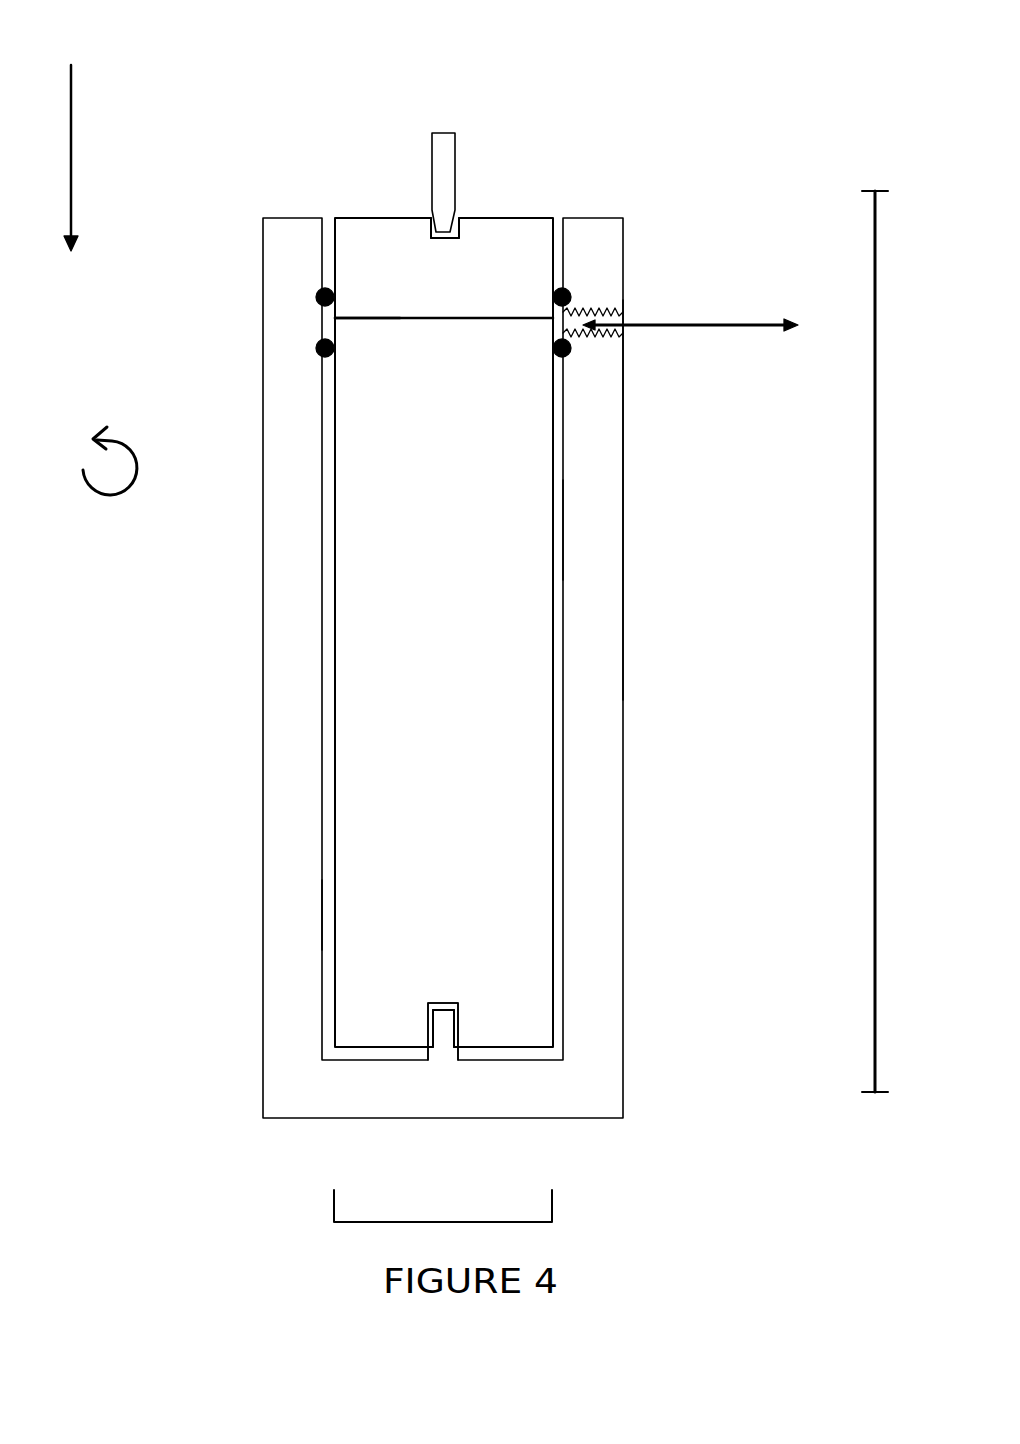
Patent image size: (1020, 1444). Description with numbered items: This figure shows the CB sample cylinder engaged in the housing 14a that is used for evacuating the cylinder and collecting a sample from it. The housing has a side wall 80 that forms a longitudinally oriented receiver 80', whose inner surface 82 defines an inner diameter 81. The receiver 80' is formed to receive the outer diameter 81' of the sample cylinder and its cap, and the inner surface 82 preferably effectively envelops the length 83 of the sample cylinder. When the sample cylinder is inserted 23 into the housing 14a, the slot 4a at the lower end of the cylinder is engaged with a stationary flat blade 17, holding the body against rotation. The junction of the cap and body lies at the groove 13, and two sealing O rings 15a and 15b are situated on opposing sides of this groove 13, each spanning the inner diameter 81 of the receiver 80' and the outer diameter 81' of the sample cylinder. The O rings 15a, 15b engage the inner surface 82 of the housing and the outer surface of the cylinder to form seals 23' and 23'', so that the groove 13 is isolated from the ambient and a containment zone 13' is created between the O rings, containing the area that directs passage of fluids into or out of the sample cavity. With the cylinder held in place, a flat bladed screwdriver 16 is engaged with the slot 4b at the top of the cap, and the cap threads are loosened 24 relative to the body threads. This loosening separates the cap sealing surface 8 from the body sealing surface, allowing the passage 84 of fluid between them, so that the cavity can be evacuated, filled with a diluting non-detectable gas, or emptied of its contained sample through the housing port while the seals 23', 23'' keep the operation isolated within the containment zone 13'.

The side wall 80 is at (380, 668).
The receiver 80' is at (364, 913).
The inner diameter of receiver 81 is at (310, 739).
The outer diameter of sample cylinder 81' is at (626, 605).
The inner surface of receiver 82 is at (567, 532).
The length of sample cylinder 83 is at (875, 573).
The passage of fluid 84 is at (718, 320).
The housing 14a is at (640, 505).
The flat bladed screwdriver 16 is at (462, 185).
The slot 4b is at (422, 227).
The slot 4a is at (445, 995).
The flat blade 17 is at (443, 1053).
The groove 13 is at (470, 240).
The containment zone 13' is at (382, 343).
The O ring 15a is at (316, 297).
The O ring 15b is at (316, 348).
The insertion 23 is at (112, 158).
The seal 23' is at (514, 385).
The seal 23'' is at (638, 231).
The loosening 24 is at (117, 500).
The cap sealing surface 8 is at (627, 320).